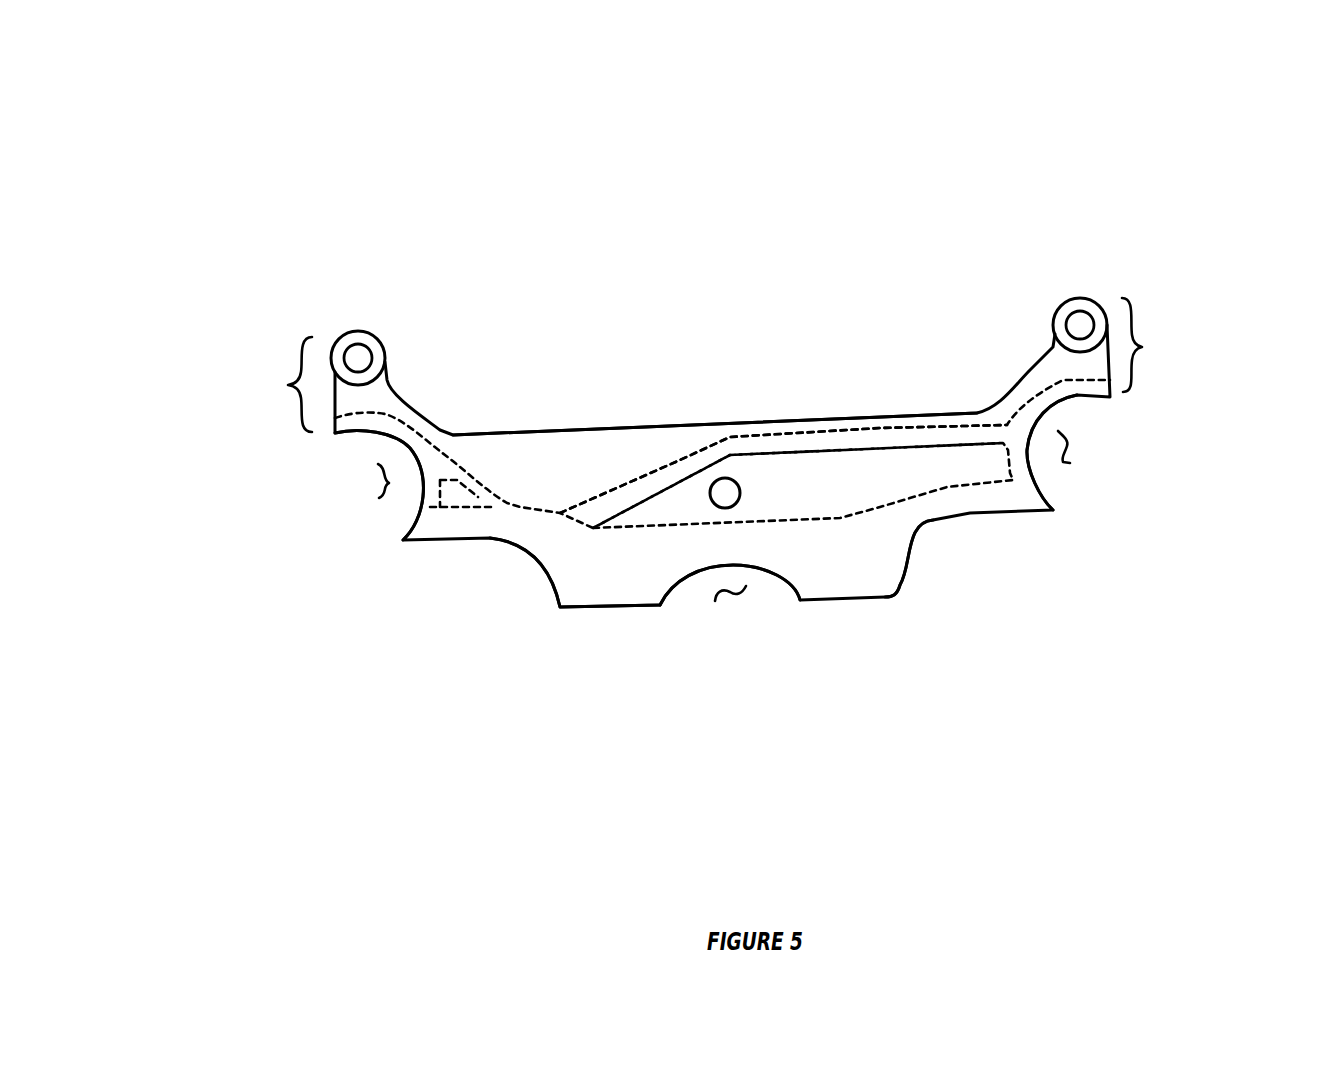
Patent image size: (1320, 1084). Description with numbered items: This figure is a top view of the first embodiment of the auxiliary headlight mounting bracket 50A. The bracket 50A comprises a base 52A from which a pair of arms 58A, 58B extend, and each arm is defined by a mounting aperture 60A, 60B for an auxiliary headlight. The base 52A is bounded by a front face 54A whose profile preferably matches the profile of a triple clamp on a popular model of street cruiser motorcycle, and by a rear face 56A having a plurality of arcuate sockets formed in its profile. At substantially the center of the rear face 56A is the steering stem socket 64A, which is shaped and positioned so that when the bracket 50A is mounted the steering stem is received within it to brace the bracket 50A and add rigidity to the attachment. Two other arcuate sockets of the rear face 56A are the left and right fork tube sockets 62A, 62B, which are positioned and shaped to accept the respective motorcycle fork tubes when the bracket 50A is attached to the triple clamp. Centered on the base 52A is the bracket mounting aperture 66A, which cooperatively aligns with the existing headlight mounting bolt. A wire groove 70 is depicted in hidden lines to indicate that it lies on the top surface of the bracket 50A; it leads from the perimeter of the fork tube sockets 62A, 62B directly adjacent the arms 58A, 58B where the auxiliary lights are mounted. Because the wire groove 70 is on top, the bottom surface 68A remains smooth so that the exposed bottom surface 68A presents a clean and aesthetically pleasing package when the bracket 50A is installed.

The bracket 50A is at (975, 605).
The base 52A is at (573, 453).
The front face 54A is at (533, 425).
The rear face 56A is at (582, 622).
The arm 58A is at (287, 385).
The arm 58B is at (1140, 347).
The mounting aperture 60A is at (352, 353).
The mounting aperture 60B is at (1081, 323).
The left fork tube socket 62A is at (373, 484).
The right fork tube socket 62B is at (1066, 445).
The steering stem socket 64A is at (737, 598).
The bracket mounting aperture 66A is at (752, 485).
The bottom surface 68A is at (845, 555).
The wire groove 70 is at (942, 438).